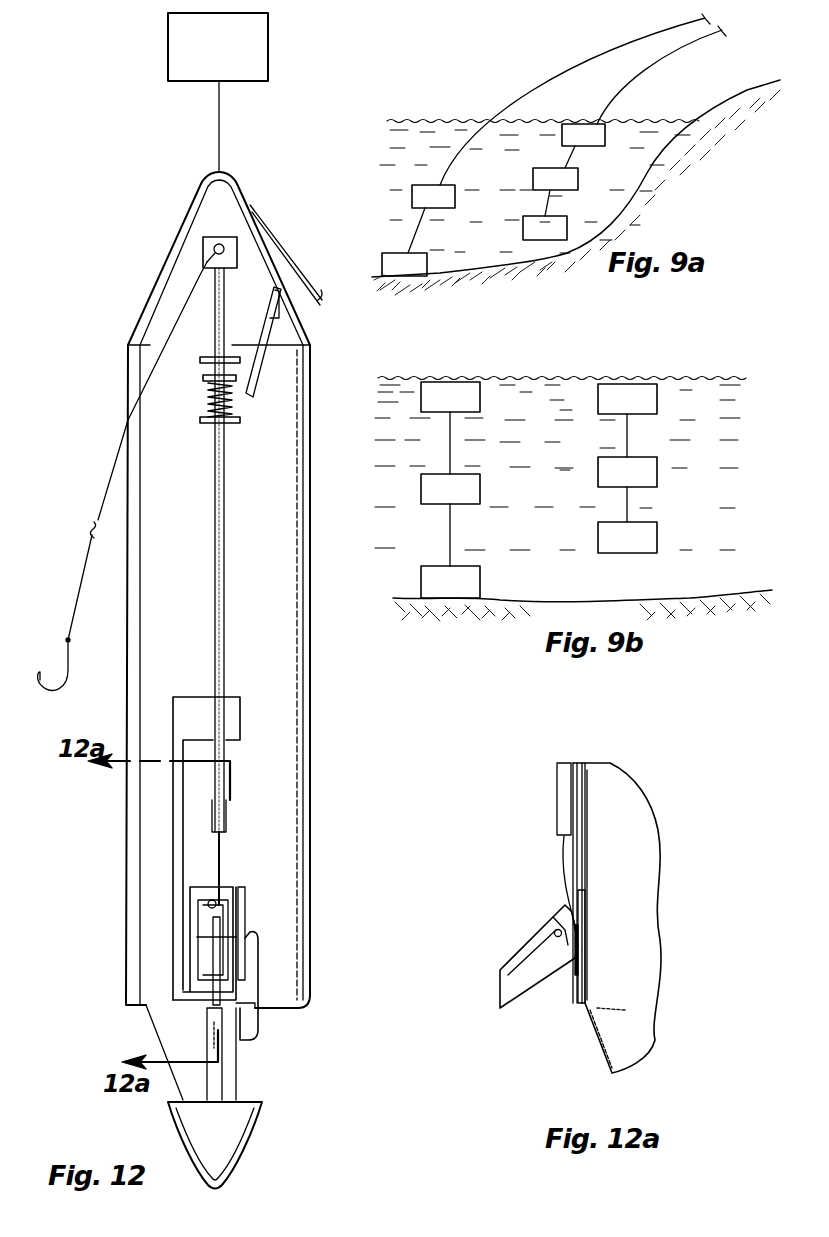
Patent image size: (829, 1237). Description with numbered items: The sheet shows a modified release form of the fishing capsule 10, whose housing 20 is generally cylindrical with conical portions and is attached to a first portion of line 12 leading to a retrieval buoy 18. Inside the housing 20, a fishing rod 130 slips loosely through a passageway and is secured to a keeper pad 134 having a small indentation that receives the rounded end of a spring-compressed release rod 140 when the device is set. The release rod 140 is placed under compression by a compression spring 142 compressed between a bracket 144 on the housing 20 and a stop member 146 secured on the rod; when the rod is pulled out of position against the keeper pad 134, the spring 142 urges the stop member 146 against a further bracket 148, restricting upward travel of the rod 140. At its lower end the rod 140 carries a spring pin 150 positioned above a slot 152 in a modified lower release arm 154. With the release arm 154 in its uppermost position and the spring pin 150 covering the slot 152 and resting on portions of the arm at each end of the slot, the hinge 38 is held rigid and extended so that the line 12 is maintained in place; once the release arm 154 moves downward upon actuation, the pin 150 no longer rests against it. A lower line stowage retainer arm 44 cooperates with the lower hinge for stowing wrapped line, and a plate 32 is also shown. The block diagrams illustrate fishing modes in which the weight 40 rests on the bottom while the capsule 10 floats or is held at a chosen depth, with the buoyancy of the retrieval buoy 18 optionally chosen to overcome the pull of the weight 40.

In FIG. 9a, the fishing capsule 10 is at (458, 194).
In FIG. 9b, the fishing capsule 10 is at (484, 487).
In FIG. 12, the first portion of line 12 is at (100, 490).
In FIG. 12, the retrieval buoy 18 is at (165, 46).
In FIG. 9a, the retrieval buoy 18 is at (607, 135).
In FIG. 9b, the retrieval buoy 18 is at (482, 396).
In FIG. 12, the housing 20 is at (302, 790).
In FIG. 12a, the housing 20 is at (636, 975).
In FIG. 12, the plate 32 is at (276, 335).
In FIG. 12, the hinge 38 is at (210, 1003).
In FIG. 12a, the hinge 38 is at (525, 950).
In FIG. 9a, the weight 40 is at (428, 262).
In FIG. 9b, the weight 40 is at (482, 582).
In FIG. 12, the lower line stowage retainer arm 44 is at (258, 1032).
In FIG. 12, the fishing rod 130 is at (212, 249).
In FIG. 12, the keeper pad 134 is at (210, 240).
In FIG. 12, the release rod 140 is at (216, 540).
In FIG. 12a, the release rod 140 is at (558, 810).
In FIG. 12, the compression spring 142 is at (207, 400).
In FIG. 12, the bracket 144 is at (200, 421).
In FIG. 12, the stop member 146 is at (207, 378).
In FIG. 12, the bracket 148 is at (205, 360).
In FIG. 12, the spring pin 150 is at (216, 858).
In FIG. 12a, the spring pin 150 is at (565, 875).
In FIG. 12, the slot 152 is at (206, 892).
In FIG. 12, the lower release arm 154 is at (176, 910).
In FIG. 12a, the lower release arm 154 is at (576, 852).